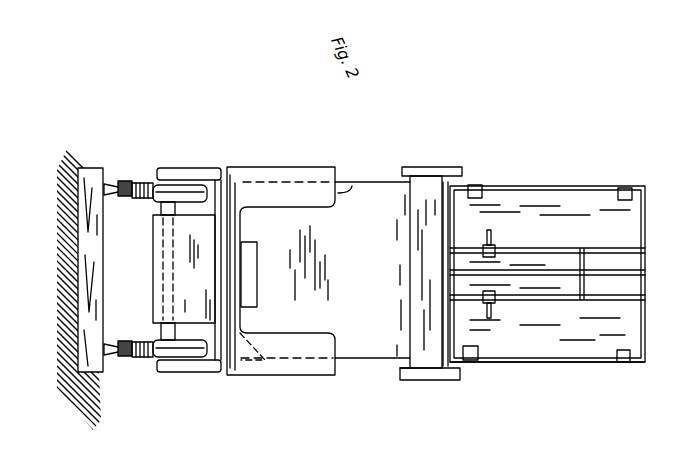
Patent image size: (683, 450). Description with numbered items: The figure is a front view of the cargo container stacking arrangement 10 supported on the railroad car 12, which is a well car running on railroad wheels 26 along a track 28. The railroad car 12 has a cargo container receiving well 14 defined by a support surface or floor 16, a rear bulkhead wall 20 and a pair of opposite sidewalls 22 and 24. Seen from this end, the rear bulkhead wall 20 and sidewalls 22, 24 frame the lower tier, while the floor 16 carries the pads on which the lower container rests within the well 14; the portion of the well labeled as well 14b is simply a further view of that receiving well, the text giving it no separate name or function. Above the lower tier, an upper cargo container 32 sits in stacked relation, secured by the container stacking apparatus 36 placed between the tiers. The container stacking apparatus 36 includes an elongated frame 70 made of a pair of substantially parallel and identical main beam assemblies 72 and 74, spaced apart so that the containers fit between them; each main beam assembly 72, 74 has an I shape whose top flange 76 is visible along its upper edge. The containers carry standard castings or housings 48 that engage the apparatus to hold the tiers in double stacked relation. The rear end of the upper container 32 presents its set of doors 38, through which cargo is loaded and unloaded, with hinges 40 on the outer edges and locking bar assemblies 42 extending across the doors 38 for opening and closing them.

The cargo container stacking arrangement 10 is at (529, 288).
The railroad car 12 is at (218, 380).
The cargo container receiving well 14 is at (258, 272).
The mounting plate 14b is at (428, 168).
The support surface or floor 16 is at (258, 375).
The rear bulkhead wall 20 is at (370, 357).
The sidewall 22 is at (303, 167).
The sidewall 24 is at (303, 375).
The railroad wheels 26 is at (142, 201).
The track 28 is at (104, 170).
The upper cargo container 32 is at (570, 186).
The container stacking apparatus 36 is at (455, 383).
The doors 38 is at (640, 289).
The hinges 40 is at (483, 187).
The locking bar assemblies 42 is at (585, 298).
The housings 48 is at (468, 187).
The frame 70 is at (352, 186).
The main beam assembly 72 is at (402, 367).
The main beam assembly 74 is at (407, 181).
The top flange 76 is at (404, 285).